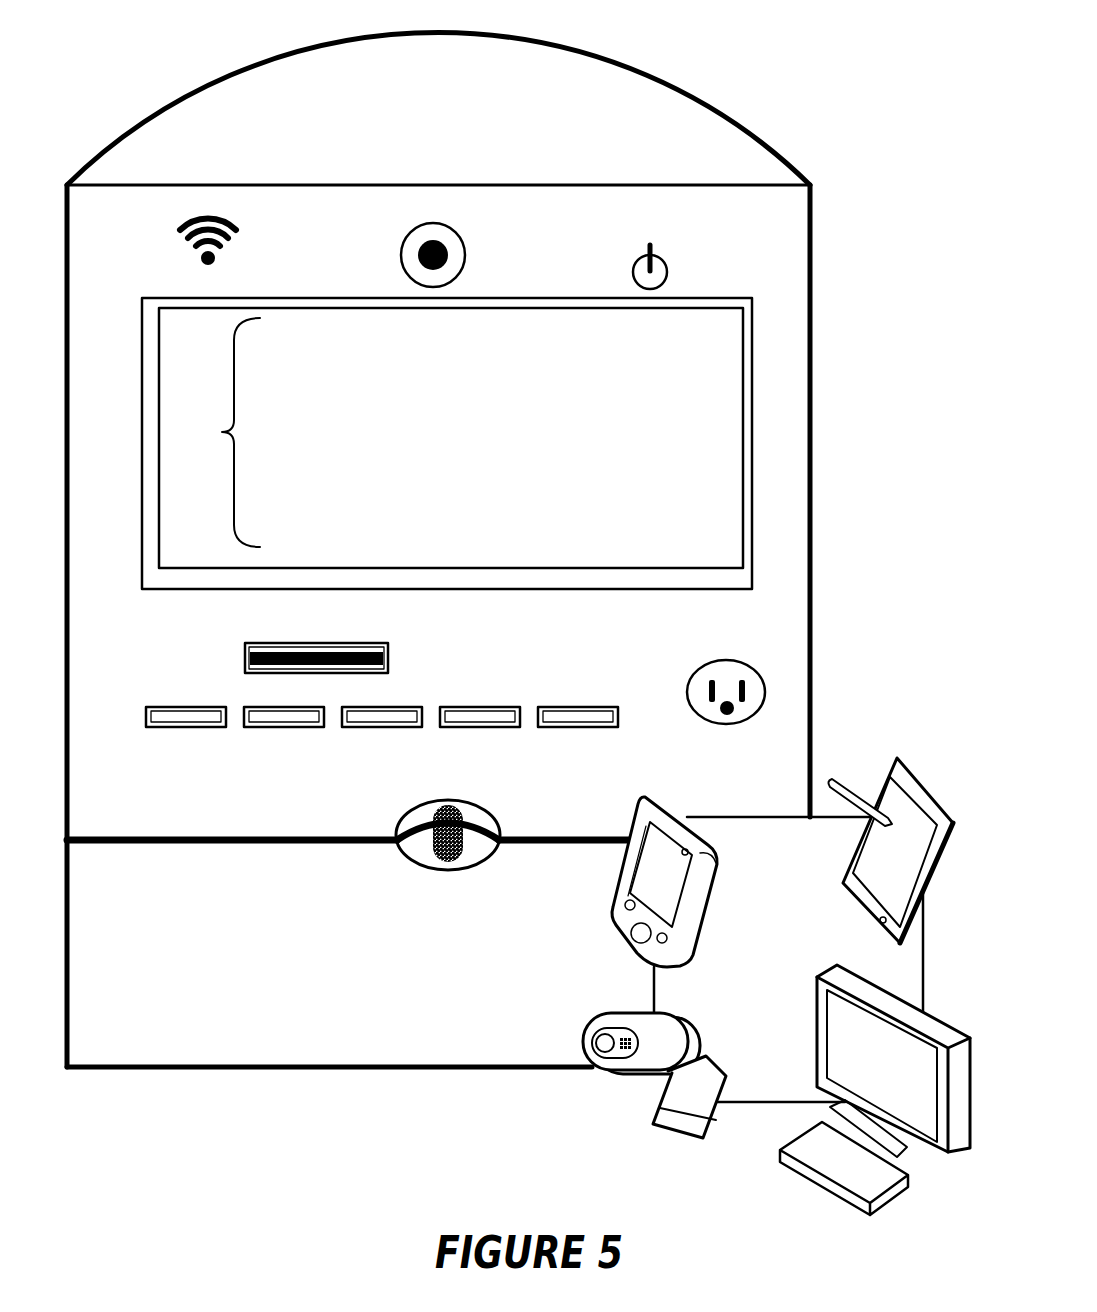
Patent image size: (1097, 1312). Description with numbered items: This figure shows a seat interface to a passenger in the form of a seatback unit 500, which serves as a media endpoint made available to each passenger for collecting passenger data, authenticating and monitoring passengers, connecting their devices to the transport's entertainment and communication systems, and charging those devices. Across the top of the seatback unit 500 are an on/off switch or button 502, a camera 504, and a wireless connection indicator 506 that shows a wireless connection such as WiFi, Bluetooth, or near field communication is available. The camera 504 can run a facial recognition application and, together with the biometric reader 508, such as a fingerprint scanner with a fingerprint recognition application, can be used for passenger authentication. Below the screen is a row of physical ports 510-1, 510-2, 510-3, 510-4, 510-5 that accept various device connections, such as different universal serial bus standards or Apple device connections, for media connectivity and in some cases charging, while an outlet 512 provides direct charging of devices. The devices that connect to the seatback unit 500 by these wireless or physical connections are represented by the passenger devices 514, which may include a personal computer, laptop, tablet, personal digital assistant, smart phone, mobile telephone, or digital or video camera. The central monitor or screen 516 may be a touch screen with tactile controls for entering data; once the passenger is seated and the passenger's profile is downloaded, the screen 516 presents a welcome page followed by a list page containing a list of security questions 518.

The seatback unit 500 is at (134, 74).
The on/off switch or button 502 is at (657, 258).
The camera 504 is at (465, 249).
The wireless connection indicator 506 is at (241, 229).
The biometric reader 508 is at (246, 644).
The port 510-1 is at (192, 728).
The port 510-2 is at (290, 728).
The port 510-3 is at (388, 728).
The port 510-4 is at (486, 728).
The port 510-5 is at (580, 728).
The outlet 512 is at (727, 724).
The passenger devices 514 is at (776, 986).
The monitor or screen 516 is at (447, 443).
The list of security questions 518 is at (359, 432).